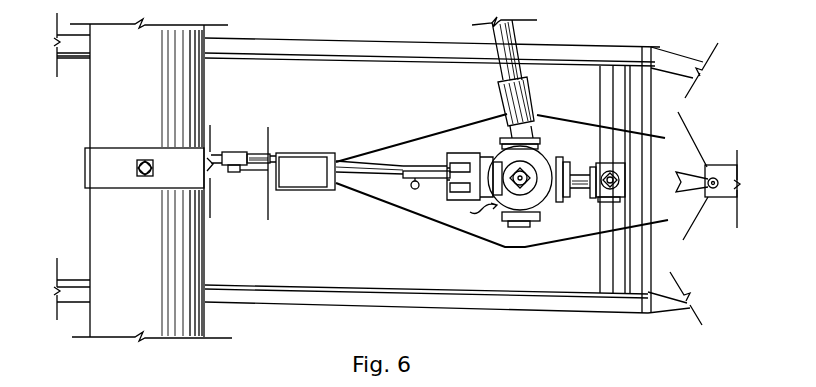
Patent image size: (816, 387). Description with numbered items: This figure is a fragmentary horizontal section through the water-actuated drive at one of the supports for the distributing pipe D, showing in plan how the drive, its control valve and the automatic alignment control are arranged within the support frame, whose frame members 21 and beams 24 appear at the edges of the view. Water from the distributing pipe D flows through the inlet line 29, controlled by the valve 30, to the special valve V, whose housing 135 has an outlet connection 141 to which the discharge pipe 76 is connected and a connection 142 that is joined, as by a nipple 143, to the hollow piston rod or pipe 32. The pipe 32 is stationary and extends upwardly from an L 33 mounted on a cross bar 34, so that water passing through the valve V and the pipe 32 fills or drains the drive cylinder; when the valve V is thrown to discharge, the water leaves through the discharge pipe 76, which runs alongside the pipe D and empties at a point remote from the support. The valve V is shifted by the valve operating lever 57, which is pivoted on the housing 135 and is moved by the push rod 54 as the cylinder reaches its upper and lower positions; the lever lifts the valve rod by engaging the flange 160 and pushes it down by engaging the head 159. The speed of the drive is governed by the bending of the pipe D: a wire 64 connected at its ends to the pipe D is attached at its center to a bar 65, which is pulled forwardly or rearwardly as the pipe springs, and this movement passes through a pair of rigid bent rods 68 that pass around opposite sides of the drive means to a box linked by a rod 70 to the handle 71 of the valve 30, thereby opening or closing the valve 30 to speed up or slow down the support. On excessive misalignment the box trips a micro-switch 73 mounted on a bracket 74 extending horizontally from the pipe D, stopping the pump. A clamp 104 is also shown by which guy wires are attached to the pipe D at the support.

The distributing pipe D is at (91, 115).
The frame beams 21 is at (330, 61).
The beam 24 is at (676, 58).
The inlet line 29 is at (380, 173).
The valve 30 is at (234, 152).
The hollow piston rod or pipe 32 is at (604, 192).
The L 33 is at (620, 165).
The cross bar 34 is at (605, 86).
The push rod 54 is at (417, 189).
The valve operating lever 57 is at (434, 171).
The wire or rod 64 is at (689, 131).
The bar 65 is at (729, 165).
The rods 68 is at (417, 139).
The rod 70 is at (262, 174).
The handle 71 is at (233, 173).
The micro-switch 73 is at (311, 156).
The bracket 74 is at (165, 188).
The discharge pipe 76 is at (516, 36).
The clamp 104 is at (136, 166).
The housing 135 is at (508, 204).
The outlet connection 141 is at (537, 143).
The connection 142 is at (566, 166).
The nipple 143 is at (582, 189).
The head 159 is at (525, 192).
The flange 160 is at (511, 165).
The valve V is at (476, 212).